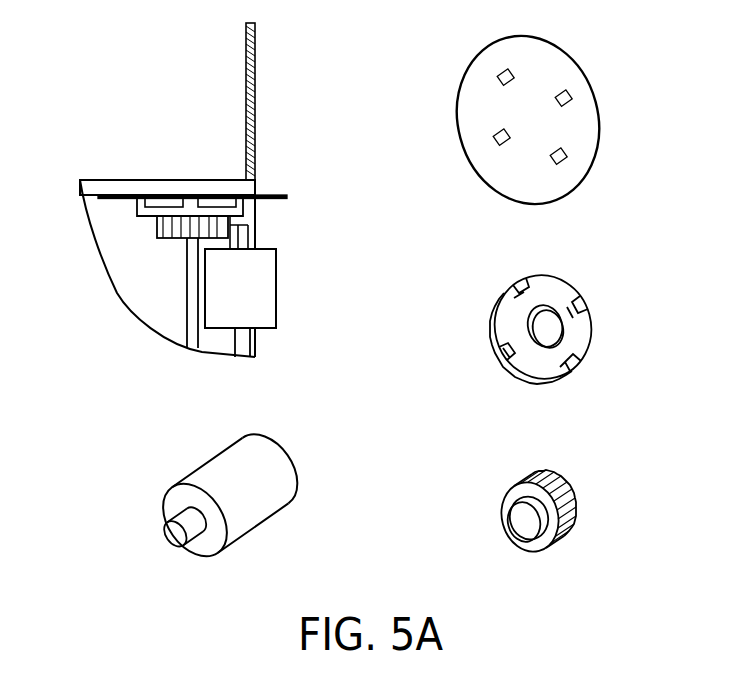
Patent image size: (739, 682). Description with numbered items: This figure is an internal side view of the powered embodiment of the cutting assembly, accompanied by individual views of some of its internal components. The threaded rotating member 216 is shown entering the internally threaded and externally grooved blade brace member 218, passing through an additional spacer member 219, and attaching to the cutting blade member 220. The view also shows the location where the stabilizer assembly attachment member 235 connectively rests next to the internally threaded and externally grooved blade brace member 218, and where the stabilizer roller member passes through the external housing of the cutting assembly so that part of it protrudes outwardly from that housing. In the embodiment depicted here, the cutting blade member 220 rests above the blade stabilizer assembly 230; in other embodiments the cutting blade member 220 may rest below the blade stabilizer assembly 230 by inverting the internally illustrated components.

The threaded rotating member 216 is at (187, 277).
The internally threaded and externally grooved blade brace member 218 is at (160, 228).
The spacer member 219 is at (157, 210).
The cutting blade member 220 is at (273, 195).
The blade stabilizer assembly 230 is at (277, 305).
The stabilizer assembly attachment member 235 is at (242, 347).